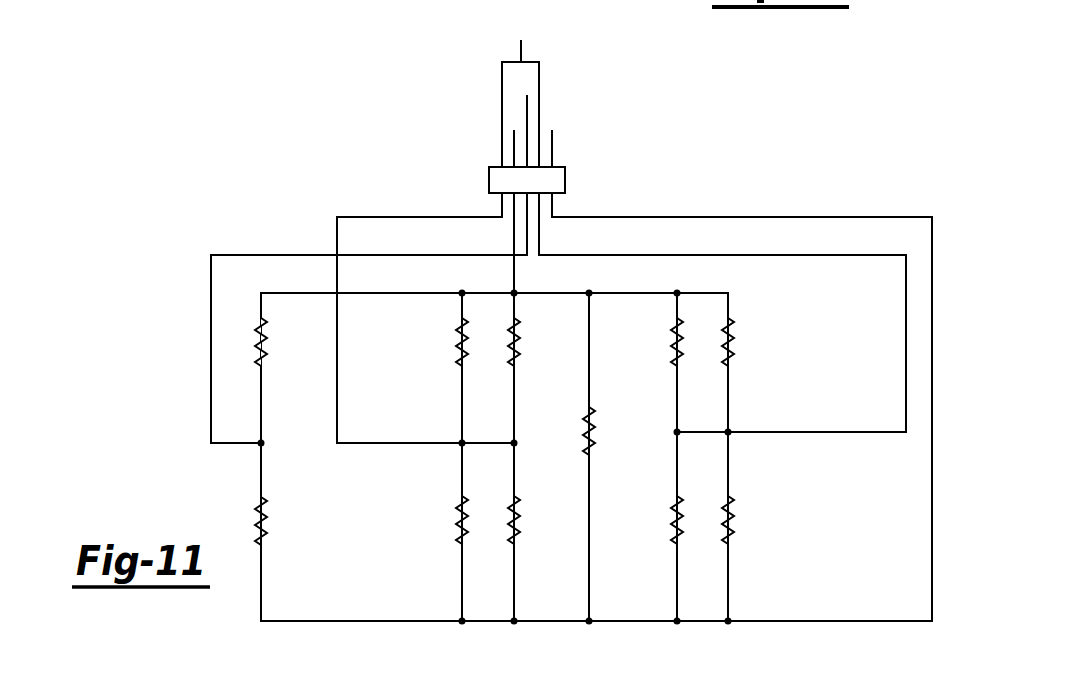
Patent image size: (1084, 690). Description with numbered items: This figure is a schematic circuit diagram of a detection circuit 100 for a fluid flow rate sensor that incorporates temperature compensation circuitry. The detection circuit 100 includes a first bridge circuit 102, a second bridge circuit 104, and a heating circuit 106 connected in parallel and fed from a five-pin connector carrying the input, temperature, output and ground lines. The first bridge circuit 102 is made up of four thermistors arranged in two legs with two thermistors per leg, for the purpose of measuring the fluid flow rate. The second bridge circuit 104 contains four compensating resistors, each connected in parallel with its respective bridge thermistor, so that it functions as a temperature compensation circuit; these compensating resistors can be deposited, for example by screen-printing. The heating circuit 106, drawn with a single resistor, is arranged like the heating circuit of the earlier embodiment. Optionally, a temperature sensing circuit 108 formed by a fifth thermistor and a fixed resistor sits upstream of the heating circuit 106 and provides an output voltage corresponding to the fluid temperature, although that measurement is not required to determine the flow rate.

The detection circuit 100 is at (571, 331).
The first bridge circuit 102 is at (530, 581).
The second bridge circuit 104 is at (447, 581).
The heating circuit 106 is at (605, 581).
The temperature sensing circuit 108 is at (274, 538).